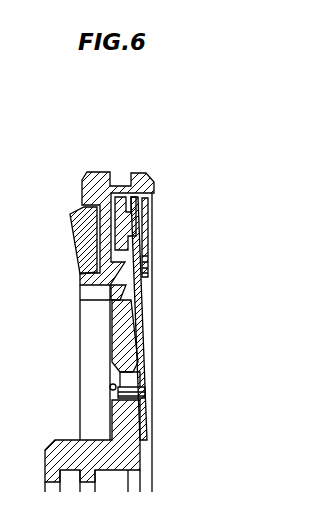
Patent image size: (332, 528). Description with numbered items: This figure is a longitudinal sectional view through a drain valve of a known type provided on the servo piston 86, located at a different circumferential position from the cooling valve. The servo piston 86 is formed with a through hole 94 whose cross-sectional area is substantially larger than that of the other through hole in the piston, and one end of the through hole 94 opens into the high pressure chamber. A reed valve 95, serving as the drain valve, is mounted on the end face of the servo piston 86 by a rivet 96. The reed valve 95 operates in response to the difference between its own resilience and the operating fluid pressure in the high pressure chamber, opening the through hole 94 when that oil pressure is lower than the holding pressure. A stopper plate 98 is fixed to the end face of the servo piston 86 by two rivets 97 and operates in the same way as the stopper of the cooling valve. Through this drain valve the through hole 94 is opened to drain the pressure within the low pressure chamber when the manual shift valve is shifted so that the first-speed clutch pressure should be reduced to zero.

The servo piston 86 is at (153, 184).
The through hole 94 is at (112, 305).
The reed valve 95 is at (143, 336).
The rivet 96 is at (143, 392).
The rivets 97 is at (153, 236).
The stopper plate 98 is at (148, 273).